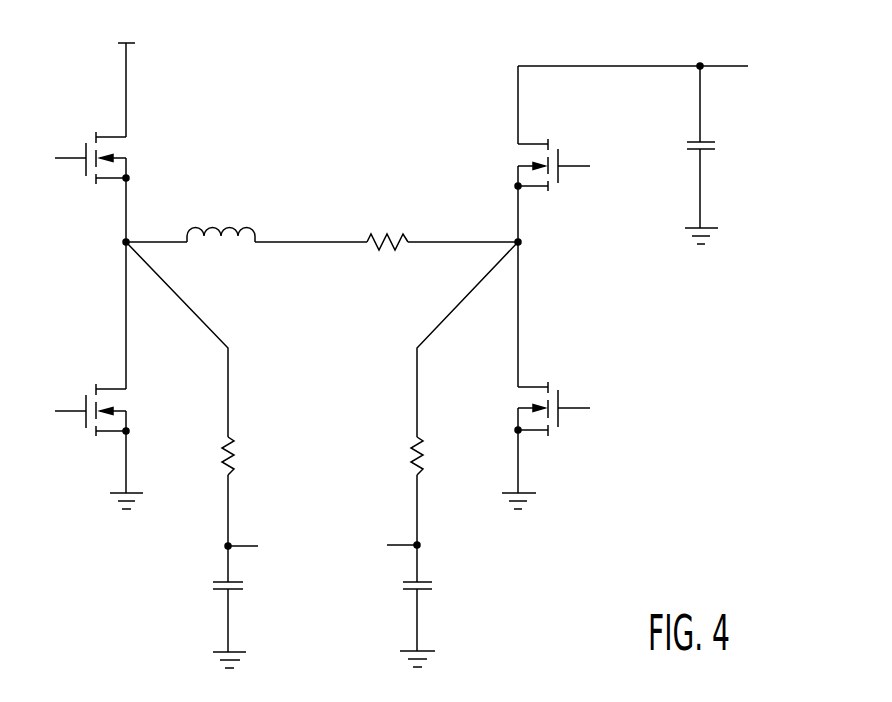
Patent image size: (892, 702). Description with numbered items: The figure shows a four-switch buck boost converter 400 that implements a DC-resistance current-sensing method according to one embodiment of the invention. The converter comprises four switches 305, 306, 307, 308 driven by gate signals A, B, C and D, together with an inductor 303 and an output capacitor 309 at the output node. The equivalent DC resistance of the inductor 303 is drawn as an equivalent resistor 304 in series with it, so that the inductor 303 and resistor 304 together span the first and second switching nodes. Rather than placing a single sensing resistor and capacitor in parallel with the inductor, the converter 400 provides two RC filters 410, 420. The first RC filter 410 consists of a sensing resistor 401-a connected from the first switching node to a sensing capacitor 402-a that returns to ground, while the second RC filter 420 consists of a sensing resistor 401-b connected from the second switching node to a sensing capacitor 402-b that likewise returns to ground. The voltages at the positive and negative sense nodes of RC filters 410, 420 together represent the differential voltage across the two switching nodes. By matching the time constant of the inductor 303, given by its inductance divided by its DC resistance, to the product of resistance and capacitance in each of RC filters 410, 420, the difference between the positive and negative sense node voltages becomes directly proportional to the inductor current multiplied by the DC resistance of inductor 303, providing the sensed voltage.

The four-switch buck boost converter 400 is at (367, 70).
The switch 305 is at (88, 125).
The switch 306 is at (85, 441).
The switch 307 is at (558, 380).
The switch 308 is at (558, 137).
The output capacitor 309 is at (720, 147).
The inductor 303 is at (222, 250).
The DCR resistor 304 is at (385, 255).
The RC filter 410 is at (255, 397).
The RC filter 420 is at (397, 397).
The sensing resistor 401-a is at (240, 445).
The sensing resistor 401-b is at (410, 465).
The sensing capacitor 402-a is at (210, 585).
The sensing capacitor 402-b is at (440, 585).